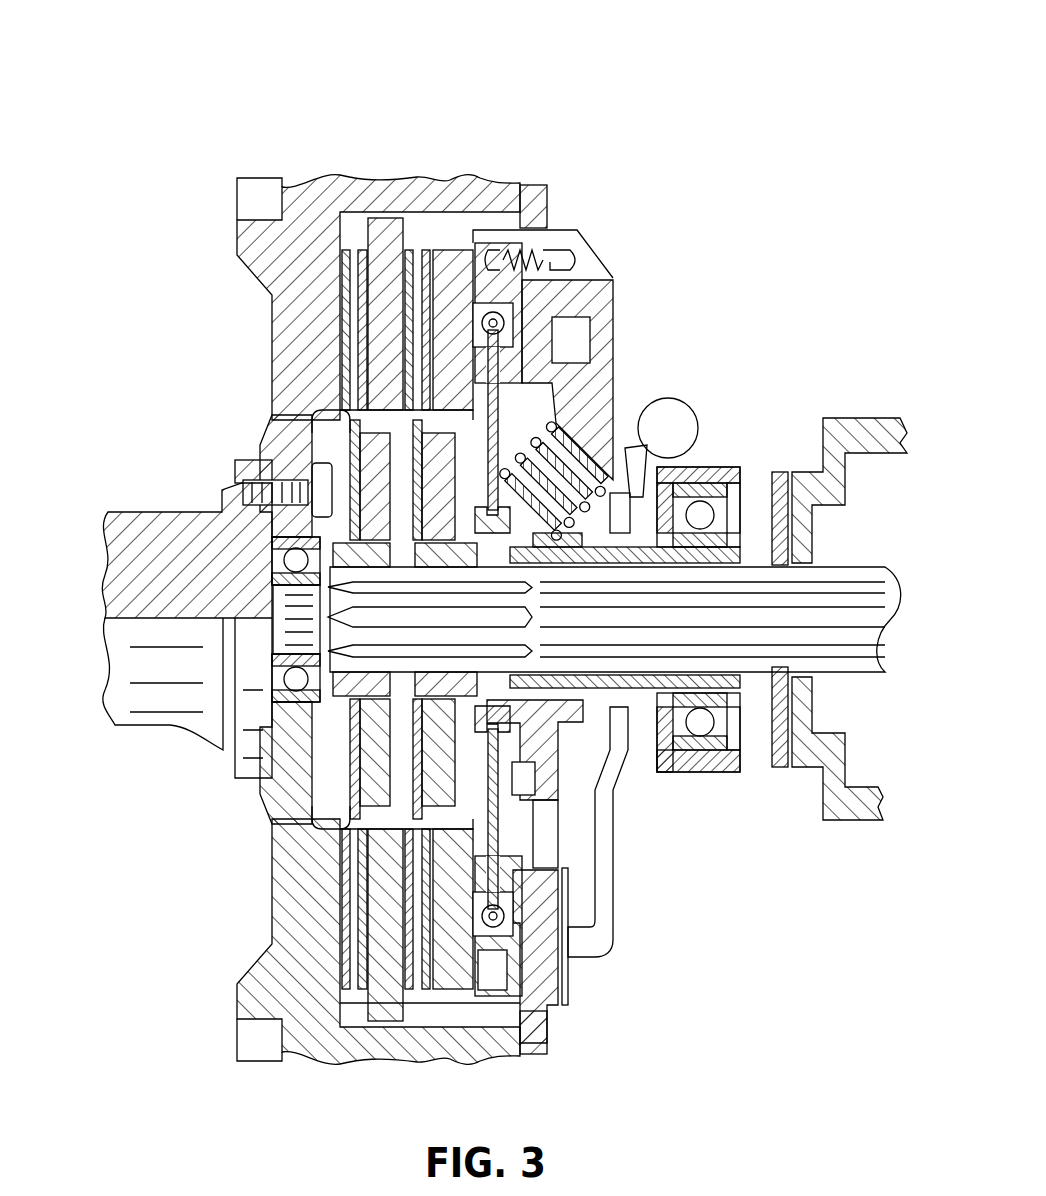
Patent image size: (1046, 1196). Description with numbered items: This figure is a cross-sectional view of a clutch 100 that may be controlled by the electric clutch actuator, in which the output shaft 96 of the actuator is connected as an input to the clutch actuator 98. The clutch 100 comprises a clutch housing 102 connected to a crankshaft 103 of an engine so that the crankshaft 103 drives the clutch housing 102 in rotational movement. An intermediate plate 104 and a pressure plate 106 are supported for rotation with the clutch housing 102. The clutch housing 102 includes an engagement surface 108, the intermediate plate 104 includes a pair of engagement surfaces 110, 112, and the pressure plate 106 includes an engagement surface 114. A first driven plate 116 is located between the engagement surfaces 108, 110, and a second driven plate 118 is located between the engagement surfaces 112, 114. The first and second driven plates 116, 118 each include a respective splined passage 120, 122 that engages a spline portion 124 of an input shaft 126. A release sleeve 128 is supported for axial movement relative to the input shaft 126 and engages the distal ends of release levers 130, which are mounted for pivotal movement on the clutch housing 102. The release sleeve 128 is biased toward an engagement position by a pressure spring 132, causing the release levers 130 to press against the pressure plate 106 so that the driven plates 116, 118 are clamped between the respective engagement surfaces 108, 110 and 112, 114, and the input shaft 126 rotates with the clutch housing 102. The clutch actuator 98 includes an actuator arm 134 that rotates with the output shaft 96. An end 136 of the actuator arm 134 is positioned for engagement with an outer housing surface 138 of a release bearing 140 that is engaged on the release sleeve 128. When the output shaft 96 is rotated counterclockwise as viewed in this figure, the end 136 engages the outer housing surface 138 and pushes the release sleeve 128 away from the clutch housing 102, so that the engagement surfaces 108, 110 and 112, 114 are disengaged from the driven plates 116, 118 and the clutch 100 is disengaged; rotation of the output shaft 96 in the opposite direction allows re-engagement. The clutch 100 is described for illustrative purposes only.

The output shaft 96 is at (687, 400).
The clutch actuator 98 is at (750, 455).
The clutch 100 is at (198, 124).
The clutch housing 102 is at (437, 185).
The crankshaft 103 is at (170, 727).
The intermediate plate 104 is at (383, 222).
The pressure plate 106 is at (485, 238).
The engagement surface 108 is at (282, 200).
The engagement surface 110 is at (345, 212).
The engagement surface 112 is at (409, 252).
The engagement surface 114 is at (452, 255).
The first driven plate 116 is at (330, 440).
The second driven plate 118 is at (342, 372).
The splined passage 120 is at (277, 573).
The splined passage 122 is at (392, 566).
The spline portion 124 is at (353, 643).
The input shaft 126 is at (900, 640).
The release sleeve 128 is at (738, 690).
The release levers 130 is at (503, 413).
The pressure spring 132 is at (560, 433).
The actuator arm 134 is at (715, 467).
The end of actuator arm 136 is at (742, 522).
The outer housing surface 138 is at (653, 750).
The release bearing 140 is at (706, 772).